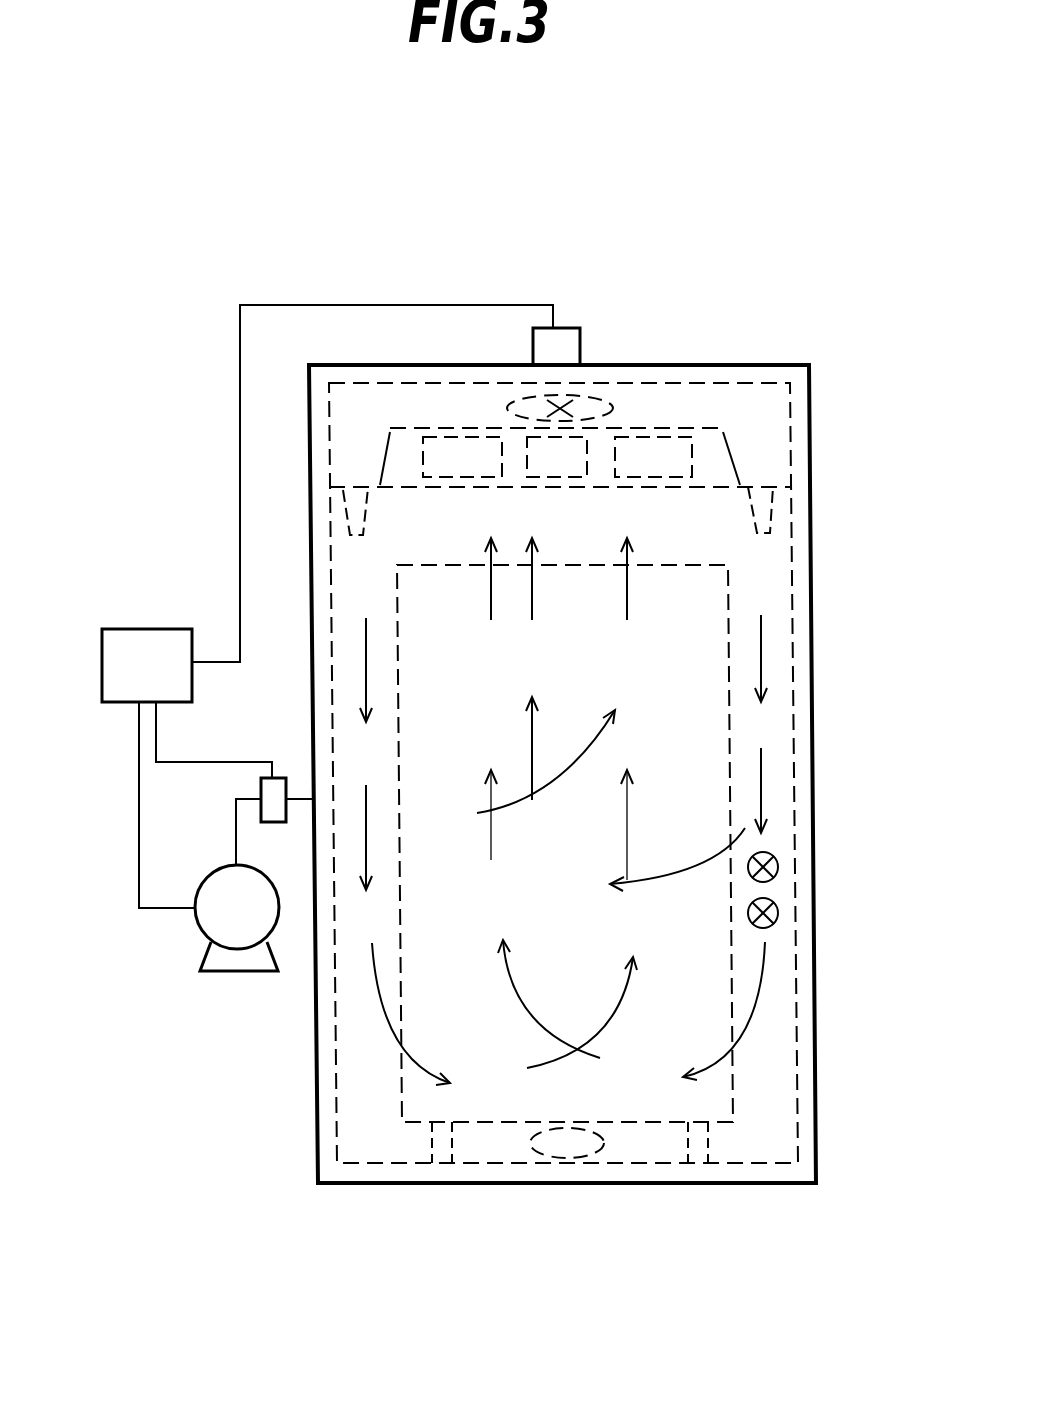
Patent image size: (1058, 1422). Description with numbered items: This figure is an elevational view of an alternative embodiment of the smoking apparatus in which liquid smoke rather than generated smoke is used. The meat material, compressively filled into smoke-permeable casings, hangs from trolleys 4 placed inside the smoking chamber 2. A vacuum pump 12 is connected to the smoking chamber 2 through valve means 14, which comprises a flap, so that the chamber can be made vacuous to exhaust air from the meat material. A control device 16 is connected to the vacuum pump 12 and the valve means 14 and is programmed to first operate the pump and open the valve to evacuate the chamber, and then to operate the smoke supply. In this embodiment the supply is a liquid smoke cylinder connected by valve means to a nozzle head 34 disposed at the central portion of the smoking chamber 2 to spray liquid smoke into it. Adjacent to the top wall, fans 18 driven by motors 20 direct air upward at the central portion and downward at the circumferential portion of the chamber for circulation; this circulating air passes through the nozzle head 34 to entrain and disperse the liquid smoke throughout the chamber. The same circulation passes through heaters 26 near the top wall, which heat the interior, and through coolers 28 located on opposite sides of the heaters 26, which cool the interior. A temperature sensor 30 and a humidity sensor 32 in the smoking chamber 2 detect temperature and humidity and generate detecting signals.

The smoking chamber 2 is at (810, 600).
The trolleys 4 is at (733, 1098).
The vacuum pump 12 is at (217, 919).
The valve means 14 is at (268, 787).
The control device 16 is at (142, 644).
The fans 18 is at (600, 403).
The motors 20 is at (429, 444).
The heaters 26 is at (477, 400).
The coolers 28 is at (400, 440).
The temperature sensor 30 is at (778, 865).
The humidity sensor 32 is at (778, 913).
The nozzle head 34 is at (565, 1155).